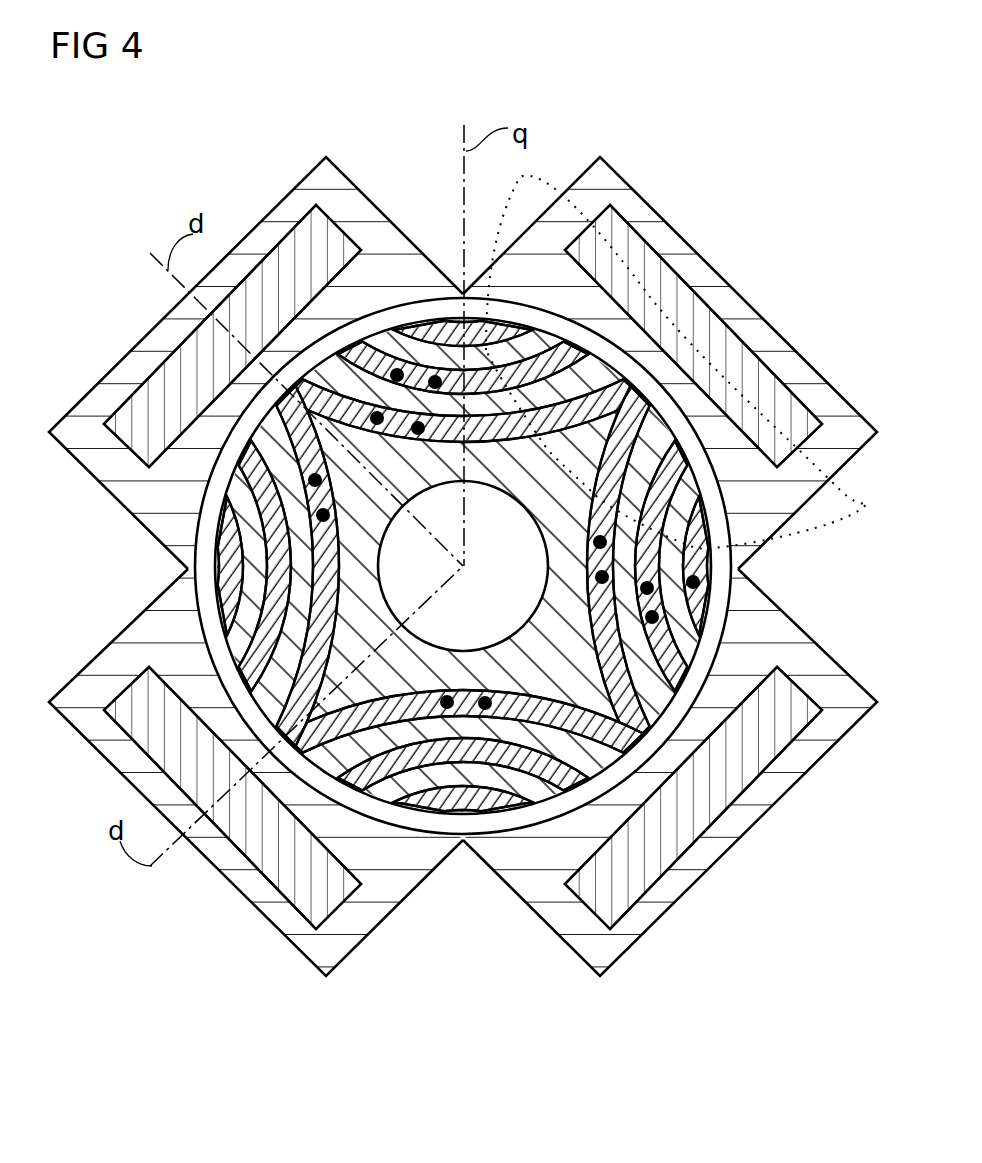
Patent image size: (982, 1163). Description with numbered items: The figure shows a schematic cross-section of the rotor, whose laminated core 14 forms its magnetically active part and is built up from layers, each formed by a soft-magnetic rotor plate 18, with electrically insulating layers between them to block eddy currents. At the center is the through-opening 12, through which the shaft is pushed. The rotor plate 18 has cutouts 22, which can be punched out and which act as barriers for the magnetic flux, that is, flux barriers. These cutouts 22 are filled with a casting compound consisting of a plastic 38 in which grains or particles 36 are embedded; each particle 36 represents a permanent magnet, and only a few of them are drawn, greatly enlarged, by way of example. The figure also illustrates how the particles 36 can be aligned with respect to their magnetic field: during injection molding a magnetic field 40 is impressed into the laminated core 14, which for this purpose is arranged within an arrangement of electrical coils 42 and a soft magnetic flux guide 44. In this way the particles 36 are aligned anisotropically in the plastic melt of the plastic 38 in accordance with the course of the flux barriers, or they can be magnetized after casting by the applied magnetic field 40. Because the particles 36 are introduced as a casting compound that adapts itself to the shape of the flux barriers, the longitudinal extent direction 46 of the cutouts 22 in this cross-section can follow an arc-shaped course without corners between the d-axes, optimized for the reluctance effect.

The through-opening 12 is at (502, 591).
The laminated core 14 is at (693, 662).
The rotor plate 18 is at (590, 690).
The cutouts 22 is at (700, 584).
The particles 36 is at (326, 507).
The plastic 38 is at (472, 415).
The magnetic field 40 is at (680, 330).
The electrical coils 42 is at (300, 228).
The soft magnetic flux guide 44 is at (374, 220).
The longitudinal extent direction 46 is at (234, 555).